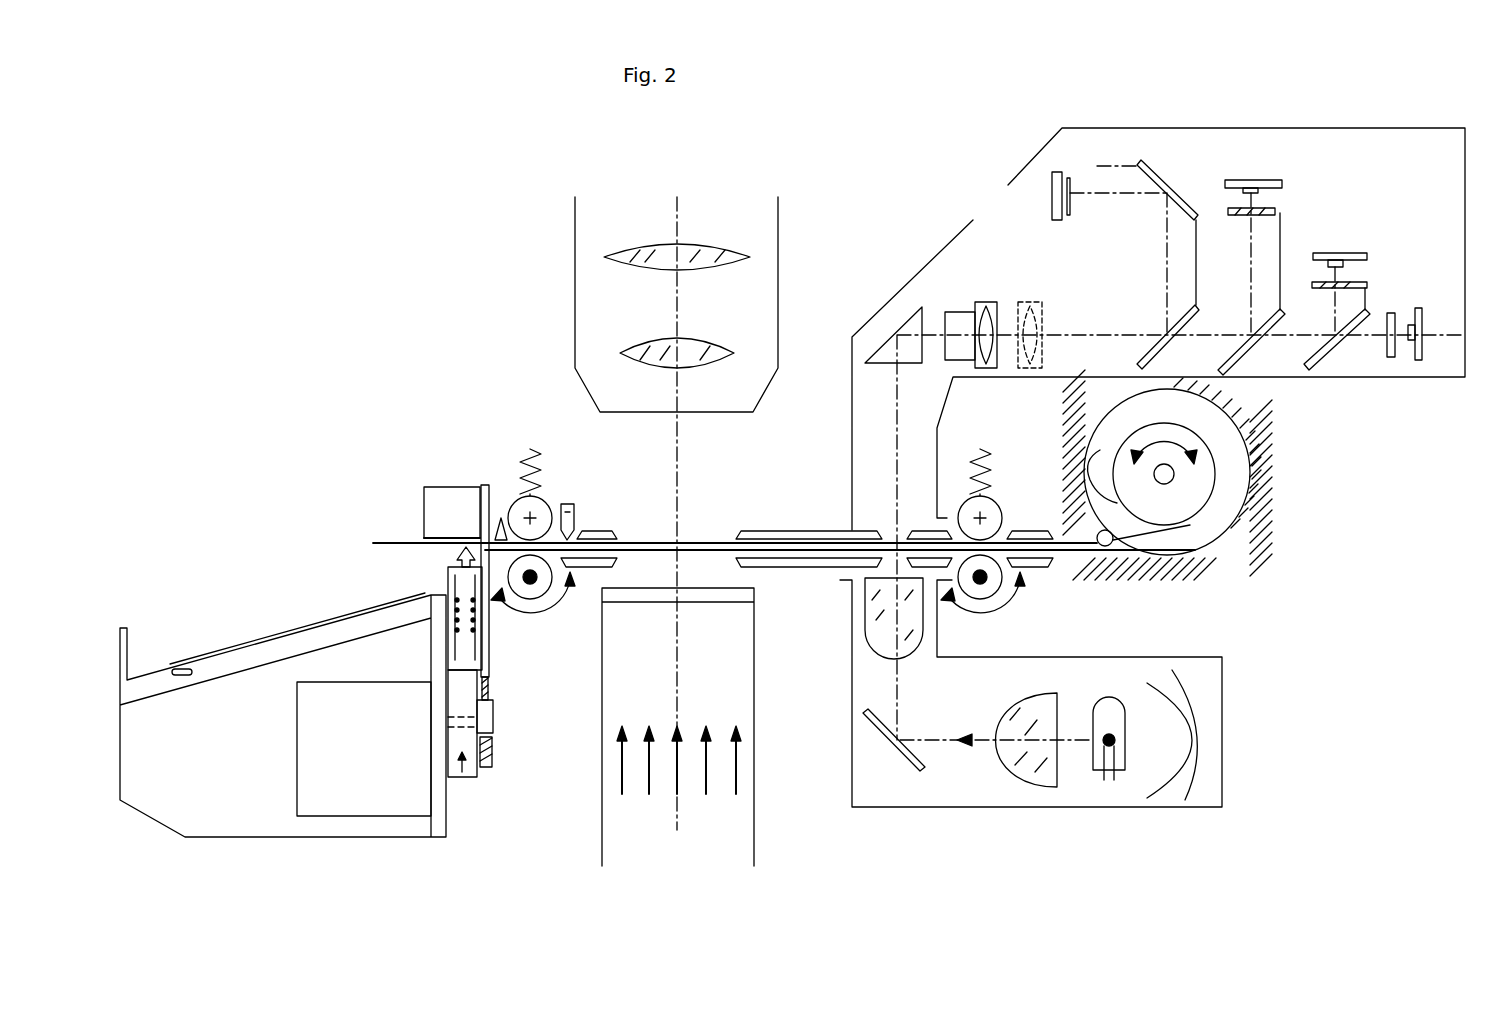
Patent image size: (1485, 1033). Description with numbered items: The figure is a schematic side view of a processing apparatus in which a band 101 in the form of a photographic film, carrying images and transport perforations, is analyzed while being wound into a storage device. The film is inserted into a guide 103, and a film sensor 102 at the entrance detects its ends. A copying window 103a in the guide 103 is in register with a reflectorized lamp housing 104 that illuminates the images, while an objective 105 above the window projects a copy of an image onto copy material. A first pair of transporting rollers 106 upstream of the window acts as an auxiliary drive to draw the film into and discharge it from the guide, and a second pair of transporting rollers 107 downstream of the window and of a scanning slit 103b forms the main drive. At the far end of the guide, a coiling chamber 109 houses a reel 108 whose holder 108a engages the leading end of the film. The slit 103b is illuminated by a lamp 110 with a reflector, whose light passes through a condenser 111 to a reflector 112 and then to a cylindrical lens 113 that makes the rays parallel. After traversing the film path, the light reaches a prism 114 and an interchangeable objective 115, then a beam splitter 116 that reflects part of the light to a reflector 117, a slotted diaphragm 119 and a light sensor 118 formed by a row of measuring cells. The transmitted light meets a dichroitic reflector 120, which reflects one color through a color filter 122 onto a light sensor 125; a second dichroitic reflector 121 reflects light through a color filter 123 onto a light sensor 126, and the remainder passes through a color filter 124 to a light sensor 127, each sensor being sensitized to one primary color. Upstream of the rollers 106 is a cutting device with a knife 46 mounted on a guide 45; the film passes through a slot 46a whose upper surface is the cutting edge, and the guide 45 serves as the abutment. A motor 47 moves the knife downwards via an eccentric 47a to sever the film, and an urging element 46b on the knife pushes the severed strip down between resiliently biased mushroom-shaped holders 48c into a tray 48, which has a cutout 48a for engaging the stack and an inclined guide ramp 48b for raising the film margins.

The guide 45 is at (500, 652).
The knife 46 is at (493, 706).
The slot 46a is at (468, 540).
The abutment or urging element 46b is at (462, 487).
The motor 47 is at (334, 803).
The eccentric 47a is at (495, 745).
The tray 48 is at (305, 630).
The cutout 48a is at (205, 652).
The inclined guide ramp 48b is at (174, 677).
The mushroom-shaped holder 48c is at (458, 558).
The band 101 is at (373, 543).
The film sensor 102 is at (567, 504).
The guide 103 is at (597, 531).
The copying window 103a is at (656, 541).
The scanning slit 103b is at (886, 541).
The reflectorized lamp housing 104 is at (758, 700).
The objective 105 is at (778, 238).
The first pair of transporting rollers 106 is at (498, 602).
The second pair of transporting rollers 107 is at (1008, 574).
The reel 108 is at (1215, 470).
The holder 108a is at (1063, 467).
The coiling chamber 109 is at (1195, 572).
The lamp 110 is at (1126, 772).
The condenser 111 is at (1030, 777).
The reflector 112 is at (905, 767).
The cylindrical lens 113 is at (870, 610).
The prism 114 is at (882, 350).
The objective 115 is at (962, 312).
The beam splitter 116 is at (1160, 335).
The reflector 117 is at (1170, 184).
The light sensor 118 is at (1052, 200).
The slotted diaphragm 119 is at (1070, 190).
The dichroitic reflector 120 is at (1240, 352).
The second dichroitic reflector 121 is at (1322, 366).
The color filter 122 is at (1278, 212).
The color filter 123 is at (1368, 286).
The color filter 124 is at (1392, 358).
The light sensor 125 is at (1255, 182).
The light sensor 126 is at (1350, 256).
The light sensor 127 is at (1420, 360).